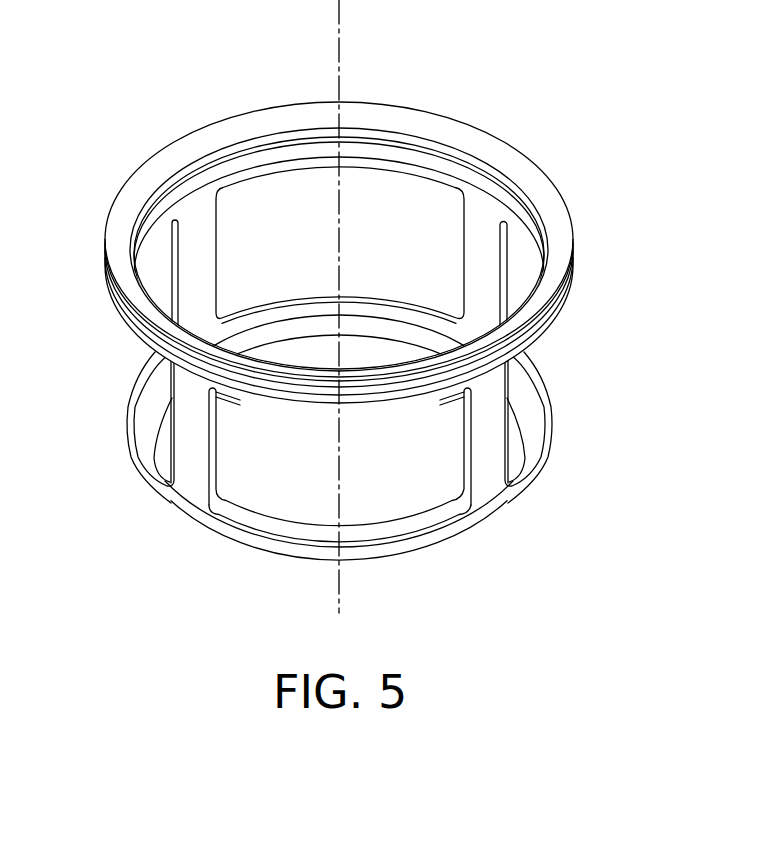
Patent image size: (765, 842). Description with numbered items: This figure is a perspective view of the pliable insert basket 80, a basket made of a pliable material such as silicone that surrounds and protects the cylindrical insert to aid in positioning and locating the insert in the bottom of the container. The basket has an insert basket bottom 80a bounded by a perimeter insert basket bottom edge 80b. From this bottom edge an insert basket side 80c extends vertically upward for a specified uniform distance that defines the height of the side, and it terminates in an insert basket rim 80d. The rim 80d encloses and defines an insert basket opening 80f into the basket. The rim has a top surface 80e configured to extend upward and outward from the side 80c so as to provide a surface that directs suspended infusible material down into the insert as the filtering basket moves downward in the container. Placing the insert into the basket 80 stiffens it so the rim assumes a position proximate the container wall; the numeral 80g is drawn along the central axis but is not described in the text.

The pliable insert basket 80 is at (341, 306).
The insert basket bottom 80a is at (270, 522).
The insert basket bottom edge 80b is at (540, 481).
The insert basket side 80c is at (483, 262).
The insert basket rim 80d is at (143, 303).
The top surface 80e is at (130, 207).
The insert basket opening 80f is at (418, 190).
The central axis 80g is at (339, 53).